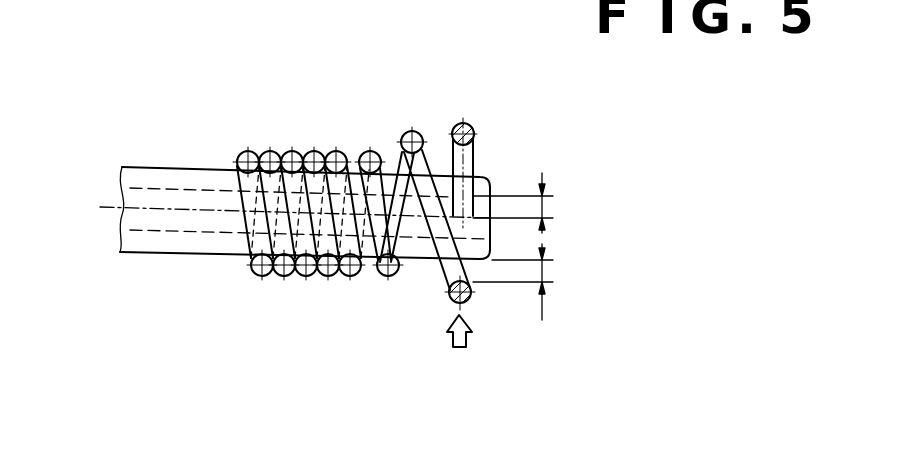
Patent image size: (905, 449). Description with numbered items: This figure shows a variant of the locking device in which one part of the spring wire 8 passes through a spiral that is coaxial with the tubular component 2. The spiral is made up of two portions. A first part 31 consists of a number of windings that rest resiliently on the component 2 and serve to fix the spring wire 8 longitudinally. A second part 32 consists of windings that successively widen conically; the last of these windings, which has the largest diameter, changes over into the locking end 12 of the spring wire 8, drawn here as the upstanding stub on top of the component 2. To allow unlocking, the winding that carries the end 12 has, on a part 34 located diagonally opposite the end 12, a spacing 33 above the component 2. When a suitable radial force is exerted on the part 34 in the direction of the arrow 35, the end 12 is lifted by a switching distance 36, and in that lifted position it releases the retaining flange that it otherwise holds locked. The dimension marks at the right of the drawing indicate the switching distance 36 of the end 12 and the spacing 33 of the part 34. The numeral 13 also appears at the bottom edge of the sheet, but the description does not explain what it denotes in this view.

The component 2 is at (158, 250).
The spring wire 8 is at (187, 100).
The locking end 12 is at (485, 146).
The end portion 13 is at (369, 441).
The first part 31 is at (293, 278).
The second part 32 is at (413, 131).
The spacing 33 is at (543, 268).
The part 34 is at (448, 289).
The arrow 35 is at (463, 347).
The switching distance 36 is at (543, 208).